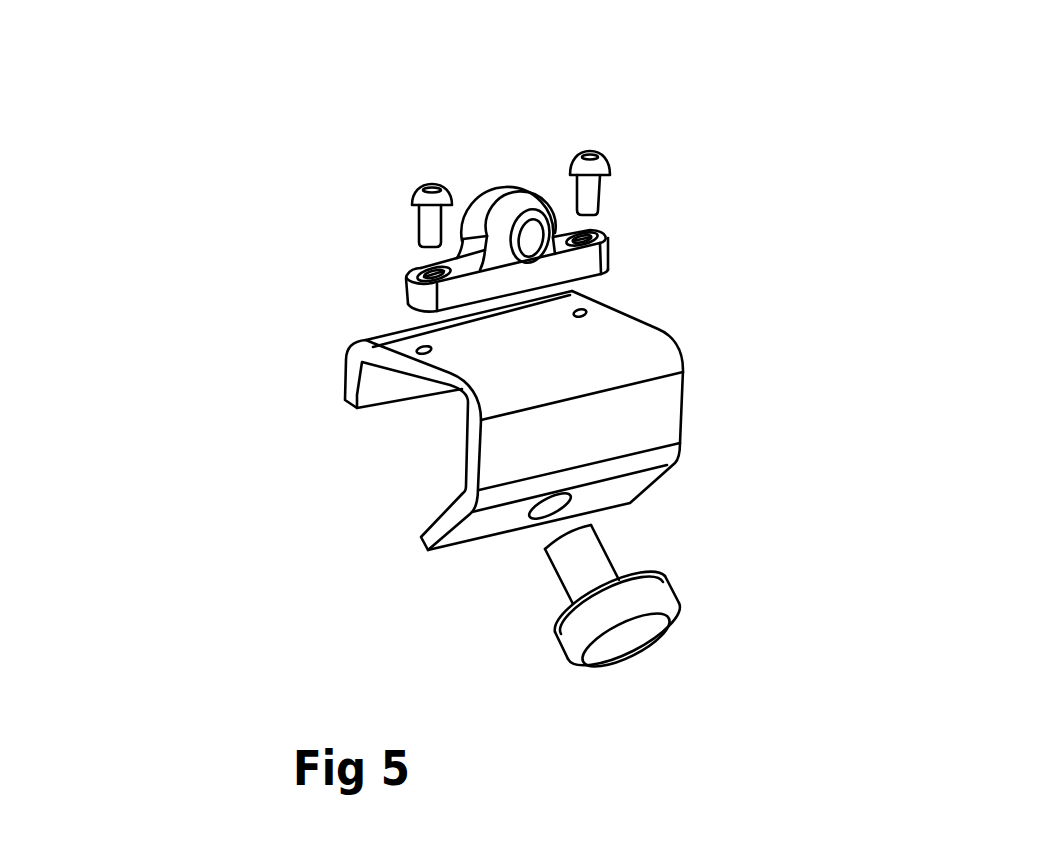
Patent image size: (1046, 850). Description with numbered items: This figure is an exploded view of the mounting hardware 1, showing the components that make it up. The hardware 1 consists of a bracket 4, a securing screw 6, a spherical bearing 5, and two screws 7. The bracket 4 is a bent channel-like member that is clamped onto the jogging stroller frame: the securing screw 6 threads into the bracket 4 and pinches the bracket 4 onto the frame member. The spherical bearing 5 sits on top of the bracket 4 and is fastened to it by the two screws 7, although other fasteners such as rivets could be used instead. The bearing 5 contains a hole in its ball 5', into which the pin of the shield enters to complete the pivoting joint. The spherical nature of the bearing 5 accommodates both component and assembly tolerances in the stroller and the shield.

The mounting hardware 1 is at (338, 512).
The bracket 4 is at (680, 343).
The spherical bearing 5 is at (483, 206).
The ball 5' is at (351, 254).
The securing screw 6 is at (658, 588).
The screws 7 is at (415, 192).